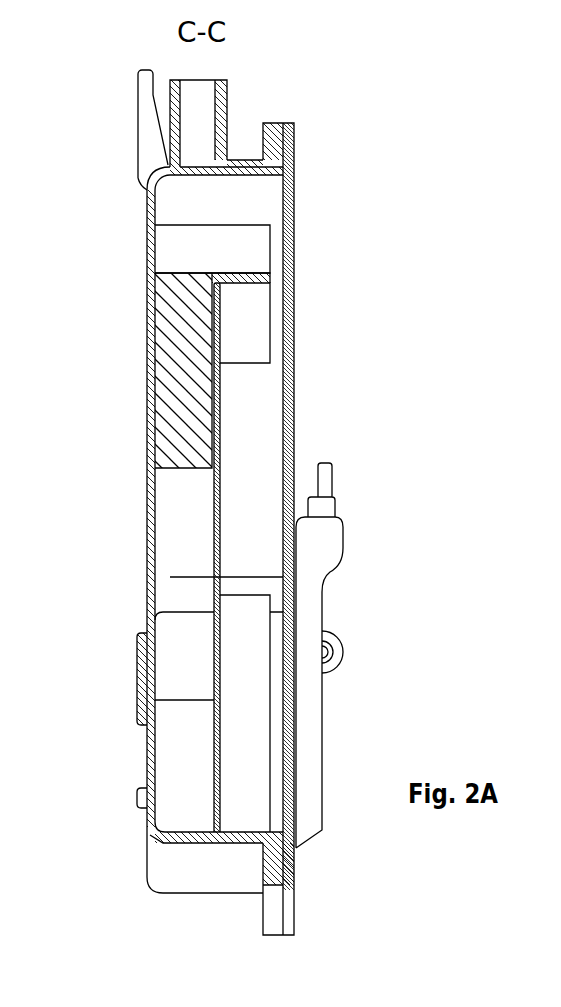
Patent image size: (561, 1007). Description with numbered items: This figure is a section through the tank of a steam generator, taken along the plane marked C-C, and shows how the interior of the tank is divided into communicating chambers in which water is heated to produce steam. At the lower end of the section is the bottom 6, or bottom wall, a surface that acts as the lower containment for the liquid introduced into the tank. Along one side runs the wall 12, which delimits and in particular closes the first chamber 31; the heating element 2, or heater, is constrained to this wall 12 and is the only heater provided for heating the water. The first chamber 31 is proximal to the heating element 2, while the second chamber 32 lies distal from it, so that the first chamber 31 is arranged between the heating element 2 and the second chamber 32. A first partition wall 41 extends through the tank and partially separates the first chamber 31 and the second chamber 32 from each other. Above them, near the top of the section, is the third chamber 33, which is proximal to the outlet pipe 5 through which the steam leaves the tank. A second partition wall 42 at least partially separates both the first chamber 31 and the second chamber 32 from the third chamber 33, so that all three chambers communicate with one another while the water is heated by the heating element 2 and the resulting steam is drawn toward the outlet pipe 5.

The heating element 2 is at (308, 588).
The outlet pipe 5 is at (190, 135).
The bottom 6 is at (150, 595).
The wall 12 is at (287, 343).
The first chamber 31 is at (252, 440).
The second chamber 32 is at (198, 499).
The third chamber 33 is at (248, 205).
The first partition wall 41 is at (217, 493).
The second partition wall 42 is at (180, 238).